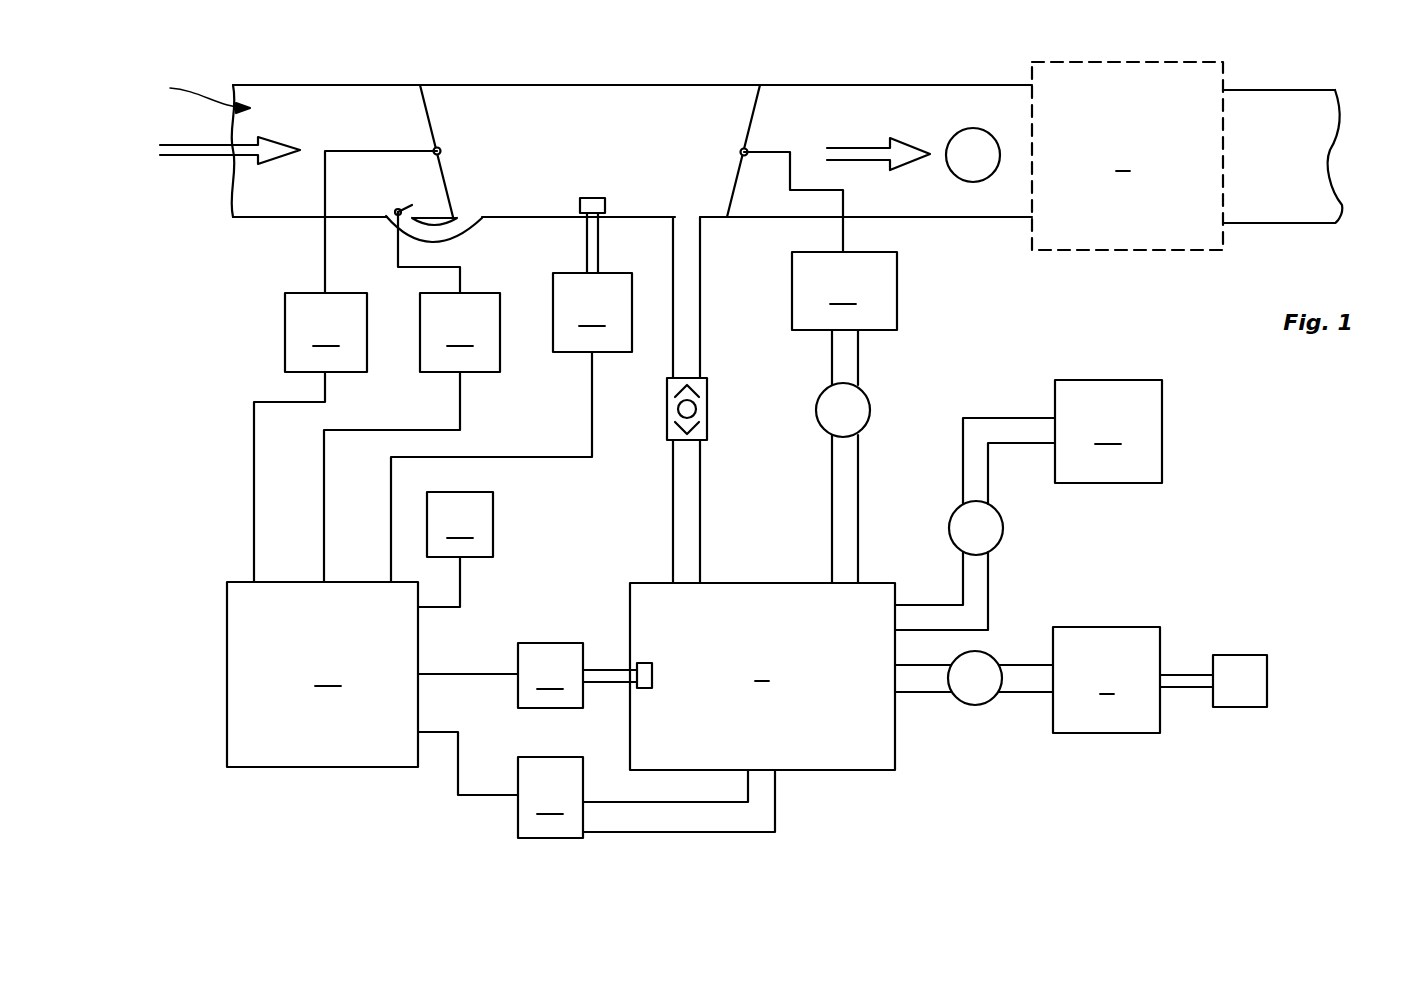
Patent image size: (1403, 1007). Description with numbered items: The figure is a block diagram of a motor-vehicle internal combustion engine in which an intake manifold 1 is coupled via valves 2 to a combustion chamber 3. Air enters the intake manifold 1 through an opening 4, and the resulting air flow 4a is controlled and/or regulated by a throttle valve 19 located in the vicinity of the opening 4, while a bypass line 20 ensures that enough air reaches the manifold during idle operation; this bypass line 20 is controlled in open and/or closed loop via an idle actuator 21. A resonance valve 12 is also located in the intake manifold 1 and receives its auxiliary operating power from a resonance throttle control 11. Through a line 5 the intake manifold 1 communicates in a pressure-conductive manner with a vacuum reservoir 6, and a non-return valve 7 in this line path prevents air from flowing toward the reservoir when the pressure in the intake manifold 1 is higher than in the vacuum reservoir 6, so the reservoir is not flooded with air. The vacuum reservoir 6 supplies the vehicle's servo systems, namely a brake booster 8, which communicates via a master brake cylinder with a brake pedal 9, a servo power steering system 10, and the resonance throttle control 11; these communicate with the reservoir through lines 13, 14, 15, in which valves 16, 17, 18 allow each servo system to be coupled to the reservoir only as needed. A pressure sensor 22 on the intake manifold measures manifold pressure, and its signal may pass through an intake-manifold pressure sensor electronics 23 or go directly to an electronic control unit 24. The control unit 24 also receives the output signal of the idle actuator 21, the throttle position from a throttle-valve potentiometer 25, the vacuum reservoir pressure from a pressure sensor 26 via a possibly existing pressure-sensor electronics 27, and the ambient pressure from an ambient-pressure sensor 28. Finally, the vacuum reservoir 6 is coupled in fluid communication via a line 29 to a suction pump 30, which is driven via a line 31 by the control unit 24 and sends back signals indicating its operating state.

The intake manifold 1 is at (585, 95).
The valves 2 is at (973, 128).
The combustion chamber 3 is at (1127, 156).
The opening 4 is at (200, 89).
The air flow 4a is at (193, 152).
The line 5 is at (694, 284).
The vacuum reservoir 6 is at (762, 676).
The non-return valve 7 is at (706, 386).
The brake booster 8 is at (1133, 680).
The brake pedal 9 is at (1242, 660).
The servo power steering system 10 is at (1108, 431).
The resonance throttle control 11 is at (844, 291).
The resonance valve 12 is at (752, 120).
The line 13 is at (922, 686).
The line 14 is at (1005, 420).
The line 15 is at (851, 359).
The valve 16 is at (980, 706).
The valve 17 is at (994, 530).
The valve 18 is at (868, 412).
The throttle valve 19 is at (432, 120).
The bypass line 20 is at (447, 238).
The idle actuator 21 is at (412, 437).
The pressure sensor 22 is at (592, 198).
The intake-manifold pressure sensor electronics 23 is at (511, 427).
The electronic control unit 24 is at (322, 674).
The throttle-valve potentiometer 25 is at (310, 437).
The pressure sensor 26 is at (645, 664).
The pressure-sensor electronics 27 is at (527, 675).
The ambient-pressure sensor 28 is at (455, 549).
The line 29 is at (768, 812).
The suction pump 30 is at (550, 797).
The line 31 is at (458, 782).